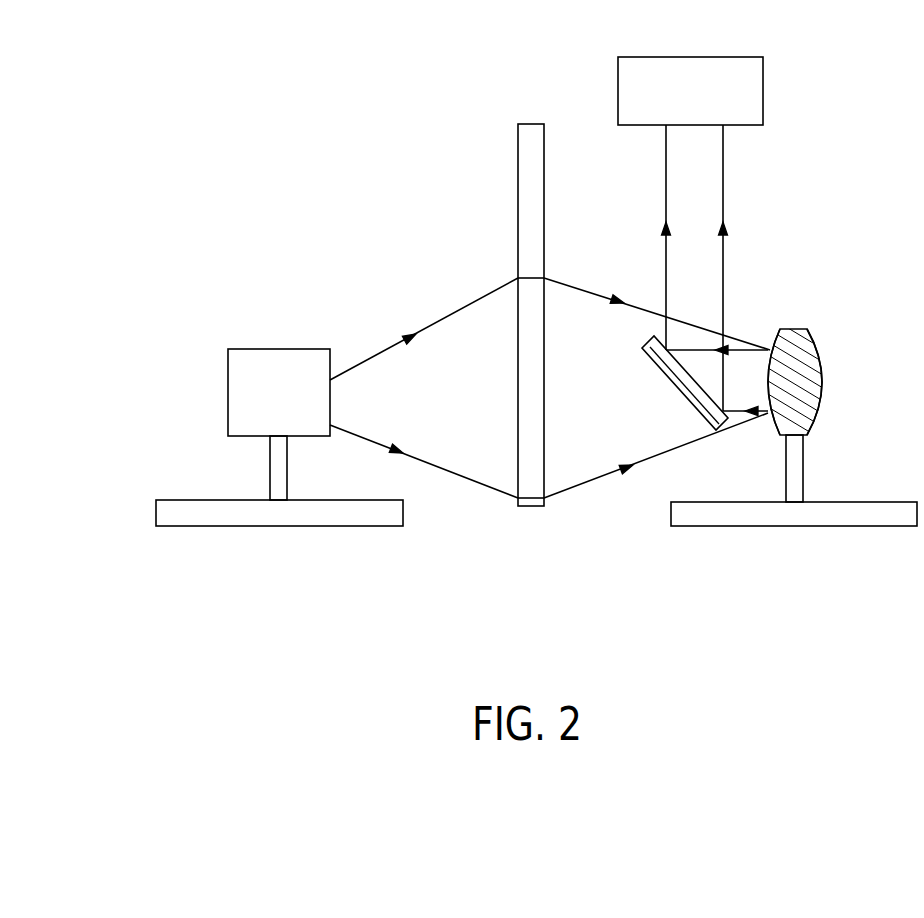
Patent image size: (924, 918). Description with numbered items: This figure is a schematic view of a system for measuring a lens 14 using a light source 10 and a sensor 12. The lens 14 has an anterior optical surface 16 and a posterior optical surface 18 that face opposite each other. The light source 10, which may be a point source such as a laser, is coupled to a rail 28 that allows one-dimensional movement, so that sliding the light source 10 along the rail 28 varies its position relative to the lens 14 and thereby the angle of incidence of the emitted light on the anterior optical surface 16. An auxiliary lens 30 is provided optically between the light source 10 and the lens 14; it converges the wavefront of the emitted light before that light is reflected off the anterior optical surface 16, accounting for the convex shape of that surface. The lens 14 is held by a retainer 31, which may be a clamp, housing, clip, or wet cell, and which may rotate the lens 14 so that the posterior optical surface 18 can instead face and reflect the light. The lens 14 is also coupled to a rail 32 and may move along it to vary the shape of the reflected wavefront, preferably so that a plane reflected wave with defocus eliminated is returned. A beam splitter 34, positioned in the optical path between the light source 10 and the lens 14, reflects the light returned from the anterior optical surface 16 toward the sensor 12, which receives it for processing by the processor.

The light source 10 is at (280, 349).
The sensor 12 is at (763, 93).
The lens 14 is at (793, 329).
The anterior optical surface 16 is at (773, 428).
The posterior optical surface 18 is at (822, 368).
The rail 28 is at (193, 500).
The auxiliary lens 30 is at (531, 124).
The retainer 31 is at (805, 457).
The rail 32 is at (880, 502).
The beam splitter 34 is at (666, 382).